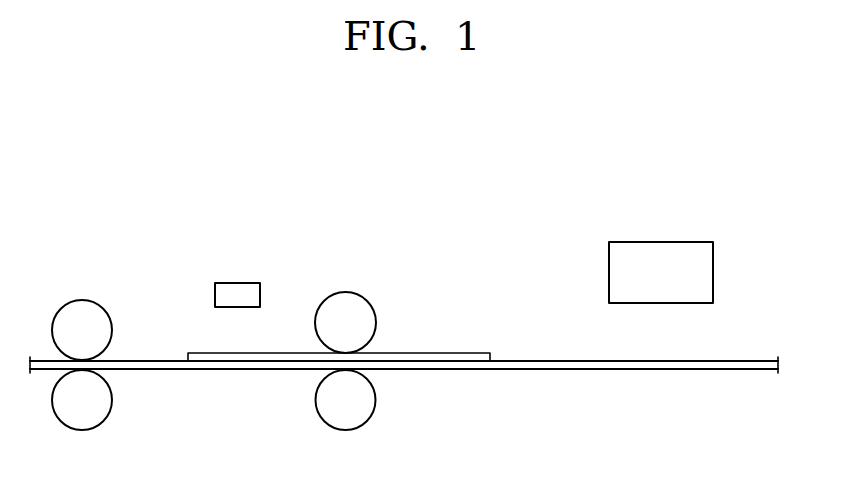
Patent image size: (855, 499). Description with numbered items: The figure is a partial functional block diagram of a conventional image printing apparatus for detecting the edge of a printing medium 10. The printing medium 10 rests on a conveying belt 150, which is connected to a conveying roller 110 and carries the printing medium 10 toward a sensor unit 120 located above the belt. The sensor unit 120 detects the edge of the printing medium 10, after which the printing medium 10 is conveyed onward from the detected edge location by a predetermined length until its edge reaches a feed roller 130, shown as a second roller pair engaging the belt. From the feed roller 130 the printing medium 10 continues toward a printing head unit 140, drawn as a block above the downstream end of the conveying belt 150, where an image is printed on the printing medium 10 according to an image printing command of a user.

The printing medium 10 is at (460, 353).
The conveying roller 110 is at (82, 300).
The sensor unit 120 is at (240, 283).
The feed roller 130 is at (348, 292).
The printing head unit 140 is at (660, 242).
The conveying belt 150 is at (697, 372).